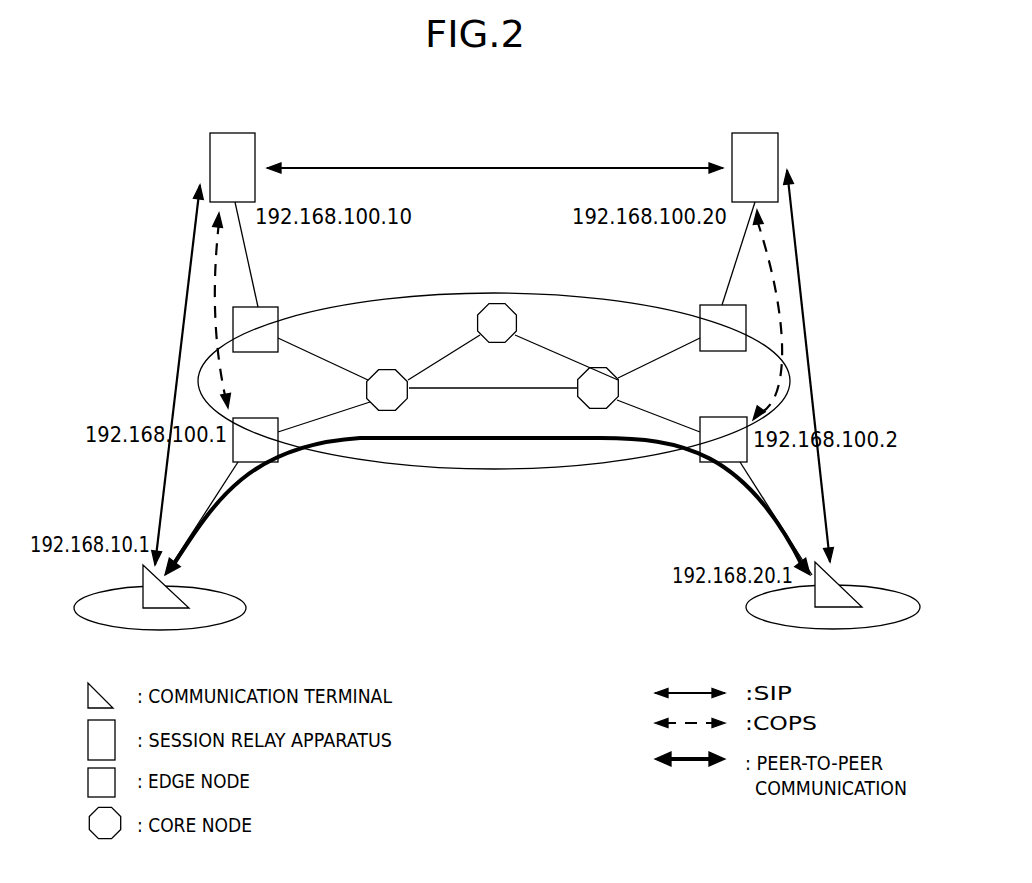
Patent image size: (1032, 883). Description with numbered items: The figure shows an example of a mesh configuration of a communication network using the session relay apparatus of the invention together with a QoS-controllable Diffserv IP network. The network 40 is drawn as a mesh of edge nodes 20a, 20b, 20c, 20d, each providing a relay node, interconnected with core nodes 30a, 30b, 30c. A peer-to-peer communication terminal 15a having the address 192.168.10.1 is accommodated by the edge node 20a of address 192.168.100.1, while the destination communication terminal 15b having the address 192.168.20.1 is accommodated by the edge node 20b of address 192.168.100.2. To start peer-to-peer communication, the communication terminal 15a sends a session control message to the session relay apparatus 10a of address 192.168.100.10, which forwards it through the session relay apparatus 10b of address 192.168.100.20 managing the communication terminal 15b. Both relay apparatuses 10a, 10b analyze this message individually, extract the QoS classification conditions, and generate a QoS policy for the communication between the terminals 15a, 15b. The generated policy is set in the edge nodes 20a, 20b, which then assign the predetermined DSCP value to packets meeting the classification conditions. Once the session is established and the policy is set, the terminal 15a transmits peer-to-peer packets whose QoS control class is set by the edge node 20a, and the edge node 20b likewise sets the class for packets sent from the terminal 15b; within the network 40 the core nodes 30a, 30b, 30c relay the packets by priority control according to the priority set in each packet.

The session relay apparatus 10a is at (255, 150).
The session relay apparatus 10b is at (778, 150).
The peer-to-peer communication terminal 15a is at (168, 577).
The destination communication terminal 15b is at (838, 578).
The edge node 20a is at (262, 418).
The edge node 20b is at (722, 417).
The edge node 20c is at (278, 318).
The edge node 20d is at (746, 318).
The core node 30a is at (408, 378).
The core node 30b is at (619, 382).
The core node 30c is at (500, 303).
The network 40 is at (495, 470).